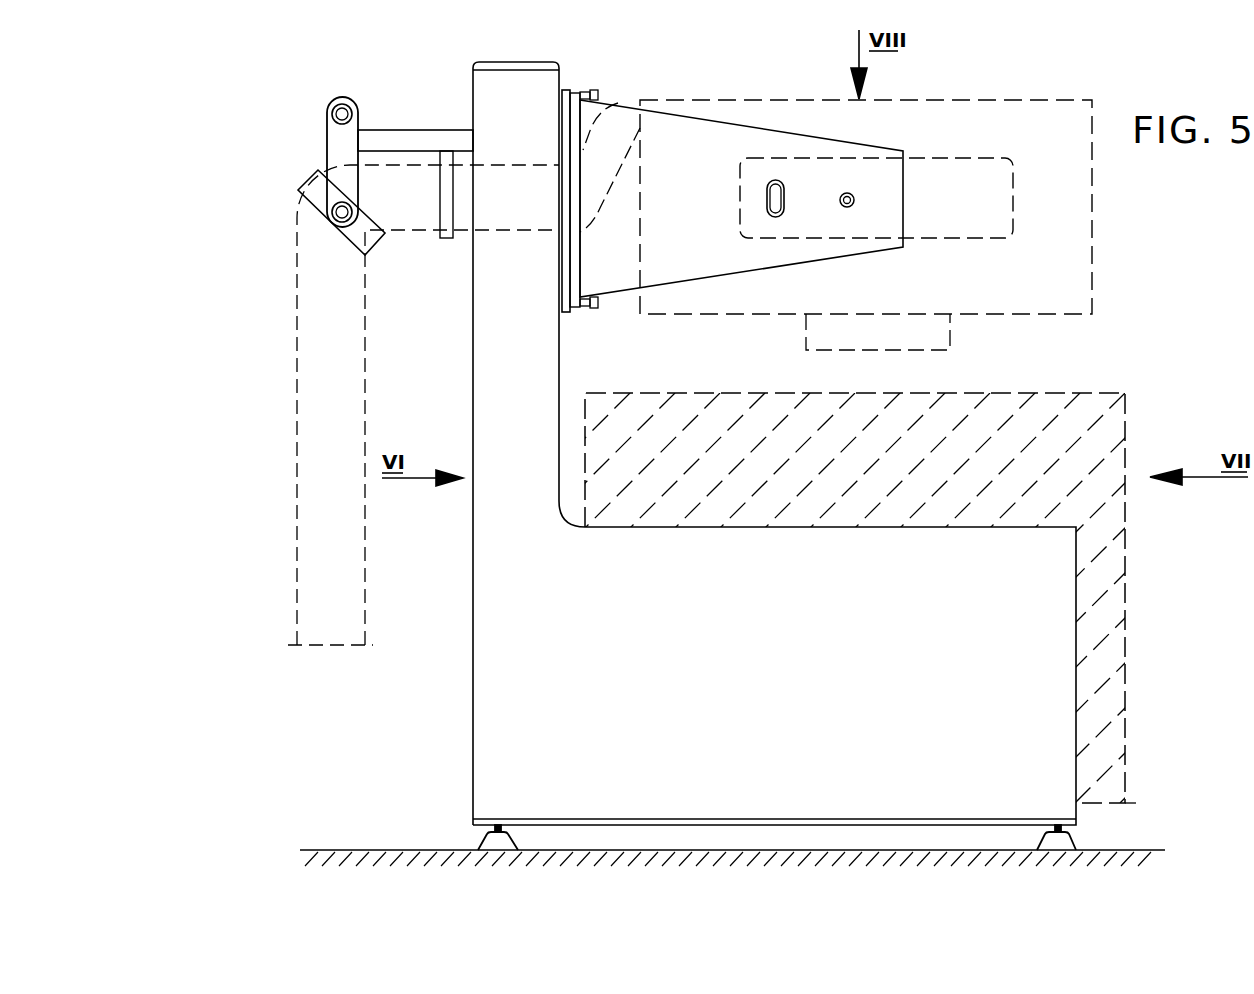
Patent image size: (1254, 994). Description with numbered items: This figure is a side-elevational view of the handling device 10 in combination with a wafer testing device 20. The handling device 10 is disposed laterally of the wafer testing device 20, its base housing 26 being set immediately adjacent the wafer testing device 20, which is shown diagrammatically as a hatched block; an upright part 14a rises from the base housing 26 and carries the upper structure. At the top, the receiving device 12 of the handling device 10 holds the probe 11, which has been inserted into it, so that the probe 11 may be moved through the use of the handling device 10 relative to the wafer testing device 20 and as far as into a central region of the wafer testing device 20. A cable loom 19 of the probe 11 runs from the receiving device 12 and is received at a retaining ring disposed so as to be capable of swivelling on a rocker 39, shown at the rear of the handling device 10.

The handling device 10 is at (441, 92).
The probe 11 is at (1083, 253).
The receiving device 12 is at (692, 138).
The column / upright 14a is at (473, 377).
The cable loom 19 is at (315, 384).
The wafer testing device 20 is at (1072, 408).
The base housing 26 is at (791, 727).
The rocker 39 is at (316, 154).